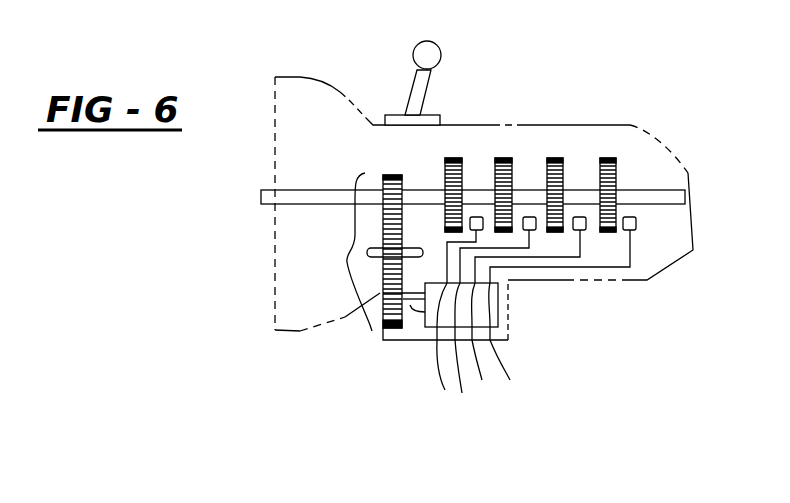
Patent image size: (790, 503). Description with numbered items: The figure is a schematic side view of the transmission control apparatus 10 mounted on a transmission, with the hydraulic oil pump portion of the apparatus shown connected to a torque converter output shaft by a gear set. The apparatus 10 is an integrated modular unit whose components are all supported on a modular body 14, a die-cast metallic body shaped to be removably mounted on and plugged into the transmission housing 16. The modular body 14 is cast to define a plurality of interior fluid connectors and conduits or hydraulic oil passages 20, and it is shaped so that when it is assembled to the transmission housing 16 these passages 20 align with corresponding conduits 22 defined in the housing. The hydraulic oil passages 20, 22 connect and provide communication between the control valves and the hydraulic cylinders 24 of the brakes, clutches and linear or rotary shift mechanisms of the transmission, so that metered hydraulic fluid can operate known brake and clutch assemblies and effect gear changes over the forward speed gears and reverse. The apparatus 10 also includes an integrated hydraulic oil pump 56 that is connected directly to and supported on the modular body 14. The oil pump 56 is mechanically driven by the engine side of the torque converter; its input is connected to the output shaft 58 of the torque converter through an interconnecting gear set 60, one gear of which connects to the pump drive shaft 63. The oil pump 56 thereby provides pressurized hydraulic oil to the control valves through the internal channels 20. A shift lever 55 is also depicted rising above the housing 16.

The transmission control apparatus 10 is at (416, 346).
The modular body 14 is at (516, 292).
The transmission housing 16 is at (323, 90).
The hydraulic oil passages 20 is at (473, 353).
The conduits 22 is at (530, 238).
The hydraulic cylinders 24 is at (528, 217).
The shift lever 55 is at (427, 82).
The hydraulic oil pump 56 is at (413, 343).
The output shaft 58 is at (302, 190).
The interconnecting gear set 60 is at (347, 260).
The pump drive shaft 63 is at (383, 325).